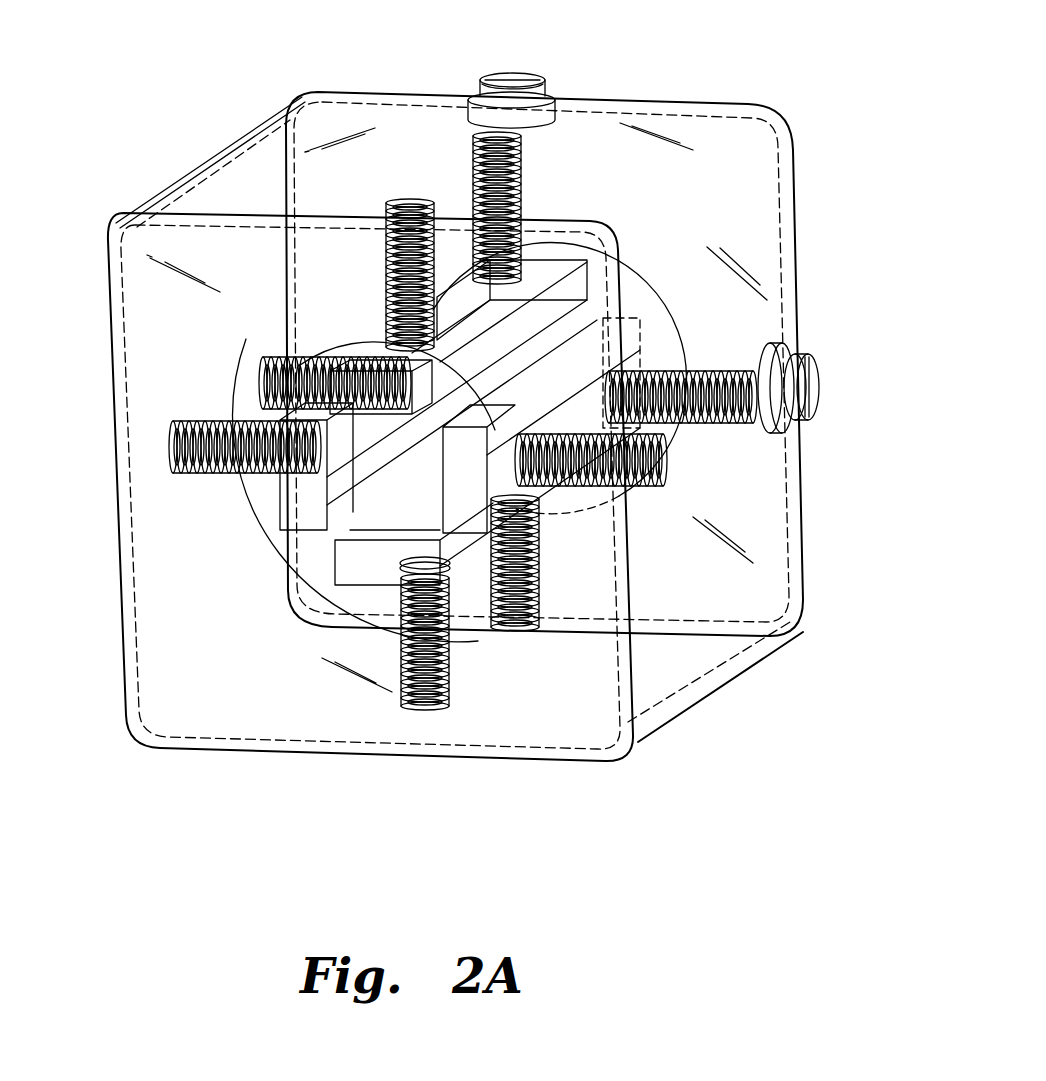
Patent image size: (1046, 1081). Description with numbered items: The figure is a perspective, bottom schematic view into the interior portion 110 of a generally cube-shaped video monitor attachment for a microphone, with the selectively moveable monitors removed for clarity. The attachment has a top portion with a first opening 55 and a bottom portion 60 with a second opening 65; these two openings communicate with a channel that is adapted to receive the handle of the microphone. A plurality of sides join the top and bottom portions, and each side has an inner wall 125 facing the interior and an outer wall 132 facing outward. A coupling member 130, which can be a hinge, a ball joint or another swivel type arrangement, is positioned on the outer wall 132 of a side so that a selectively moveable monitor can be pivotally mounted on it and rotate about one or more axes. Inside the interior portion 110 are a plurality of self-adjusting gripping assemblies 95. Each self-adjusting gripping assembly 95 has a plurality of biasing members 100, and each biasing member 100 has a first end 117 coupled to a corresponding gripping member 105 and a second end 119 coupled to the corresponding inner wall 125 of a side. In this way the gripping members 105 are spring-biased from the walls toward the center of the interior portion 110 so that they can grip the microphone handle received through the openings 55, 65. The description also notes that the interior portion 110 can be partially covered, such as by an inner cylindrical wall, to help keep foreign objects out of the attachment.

The first opening 55 is at (705, 315).
The bottom portion 60 is at (238, 647).
The second opening 65 is at (250, 553).
The self-adjusting gripping assembly 95 is at (333, 233).
The biasing member 100 is at (430, 300).
The gripping member 105 is at (310, 515).
The interior portion 110 is at (245, 532).
The first end 117 is at (395, 370).
The second end 119 is at (407, 222).
The inner wall 125 is at (775, 170).
The coupling member 130 is at (535, 72).
The outer wall 132 is at (748, 532).